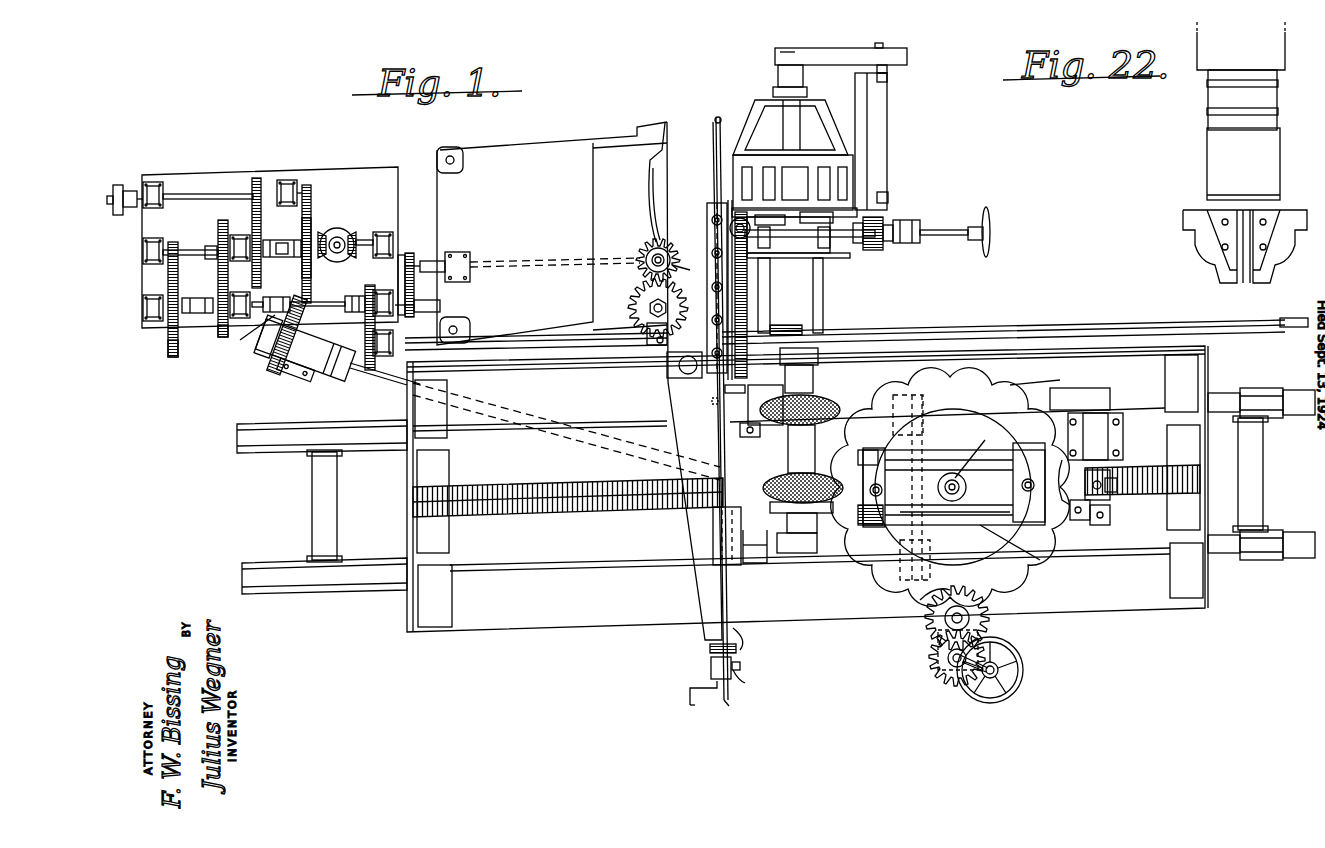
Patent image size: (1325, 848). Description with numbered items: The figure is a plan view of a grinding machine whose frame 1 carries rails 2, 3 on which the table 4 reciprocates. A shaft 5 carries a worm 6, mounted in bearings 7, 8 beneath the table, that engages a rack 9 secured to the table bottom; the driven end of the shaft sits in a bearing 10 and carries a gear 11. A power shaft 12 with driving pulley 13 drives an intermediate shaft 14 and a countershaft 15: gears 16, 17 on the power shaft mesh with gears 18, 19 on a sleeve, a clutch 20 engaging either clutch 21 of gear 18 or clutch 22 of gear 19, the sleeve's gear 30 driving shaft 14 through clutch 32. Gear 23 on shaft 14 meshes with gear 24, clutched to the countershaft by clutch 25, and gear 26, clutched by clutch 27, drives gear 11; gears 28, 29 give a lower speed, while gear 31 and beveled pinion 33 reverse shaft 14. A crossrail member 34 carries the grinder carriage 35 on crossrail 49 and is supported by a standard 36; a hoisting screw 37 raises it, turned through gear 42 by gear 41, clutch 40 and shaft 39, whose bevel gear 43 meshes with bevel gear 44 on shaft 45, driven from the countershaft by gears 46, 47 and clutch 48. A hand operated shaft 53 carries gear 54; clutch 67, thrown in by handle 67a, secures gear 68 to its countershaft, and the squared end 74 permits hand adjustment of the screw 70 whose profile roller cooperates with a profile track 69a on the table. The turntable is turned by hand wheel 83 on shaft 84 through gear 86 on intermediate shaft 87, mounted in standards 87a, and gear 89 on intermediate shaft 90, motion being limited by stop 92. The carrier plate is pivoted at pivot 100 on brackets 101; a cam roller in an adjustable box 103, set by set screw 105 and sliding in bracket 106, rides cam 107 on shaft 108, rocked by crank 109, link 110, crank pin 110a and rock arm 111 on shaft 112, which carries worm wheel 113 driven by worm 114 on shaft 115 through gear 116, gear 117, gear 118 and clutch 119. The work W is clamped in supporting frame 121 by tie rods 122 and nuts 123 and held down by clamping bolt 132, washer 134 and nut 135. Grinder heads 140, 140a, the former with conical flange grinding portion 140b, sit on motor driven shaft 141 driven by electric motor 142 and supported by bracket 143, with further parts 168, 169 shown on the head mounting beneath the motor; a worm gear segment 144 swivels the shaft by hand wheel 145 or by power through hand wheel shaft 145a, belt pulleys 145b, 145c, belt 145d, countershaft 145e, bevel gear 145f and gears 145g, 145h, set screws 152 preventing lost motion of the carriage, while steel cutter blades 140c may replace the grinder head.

In FIG. 1, the frame 1 is at (400, 614).
In FIG. 1, the rail 2 is at (245, 571).
In FIG. 1, the rail 3 is at (240, 438).
In FIG. 1, the table 4 is at (810, 578).
In FIG. 1, the shaft 5 is at (395, 388).
In FIG. 1, the worm 6 is at (780, 475).
In FIG. 1, the bearing 7 is at (706, 458).
In FIG. 1, the bearing 8 is at (868, 528).
In FIG. 1, the rack 9 is at (545, 487).
In FIG. 1, the bearing 10 is at (305, 370).
In FIG. 1, the gear 11 is at (283, 371).
In FIG. 1, the power shaft 12 is at (200, 194).
In FIG. 1, the driving pulley 13 is at (126, 185).
In FIG. 1, the intermediate shaft 14 is at (200, 255).
In FIG. 1, the countershaft 15 is at (322, 302).
In FIG. 1, the gear 16 is at (257, 178).
In FIG. 1, the gear 17 is at (307, 185).
In FIG. 1, the gear 18 is at (262, 240).
In FIG. 1, the gear 19 is at (311, 220).
In FIG. 1, the clutch 20 is at (282, 257).
In FIG. 1, the clutch 21 is at (243, 261).
In FIG. 1, the clutch 22 is at (338, 229).
In FIG. 1, the gear 23 is at (220, 222).
In FIG. 1, the gear 24 is at (222, 337).
In FIG. 1, the clutch 25 is at (196, 313).
In FIG. 1, the gear 26 is at (322, 258).
In FIG. 1, the clutch 27 is at (255, 337).
In FIG. 1, the gear 28 is at (173, 242).
In FIG. 1, the gear 29 is at (168, 350).
In FIG. 1, the gear 30 is at (285, 294).
In FIG. 1, the gear 31 is at (383, 232).
In FIG. 1, the clutch 32 is at (364, 246).
In FIG. 1, the beveled pinion 33 is at (354, 232).
In FIG. 1, the crossrail member 34 is at (672, 404).
In FIG. 1, the grinder carriage 35 is at (708, 210).
In FIG. 1, the standard 36 is at (552, 233).
In FIG. 1, the hoisting screw 37 is at (648, 308).
In FIG. 1, the shaft 39 is at (672, 248).
In FIG. 1, the clutch 40 is at (680, 272).
In FIG. 1, the gear 41 is at (652, 222).
In FIG. 1, the gear 42 is at (636, 292).
In FIG. 1, the bevel gear 43 is at (655, 215).
In FIG. 1, the bevel gear 44 is at (645, 255).
In FIG. 1, the shaft 45 is at (548, 262).
In FIG. 1, the gear 46 is at (410, 253).
In FIG. 1, the gear 47 is at (420, 312).
In FIG. 1, the clutch 48 is at (435, 295).
In FIG. 1, the crossrail 49 is at (714, 122).
In FIG. 1, the hand operated shaft 53 is at (690, 690).
In FIG. 1, the gear 54 is at (710, 647).
In FIG. 1, the clutch 67 is at (711, 664).
In FIG. 1, the handle 67a is at (753, 679).
In FIG. 1, the gear 68 is at (750, 639).
In FIG. 1, the profile track 69a is at (1205, 353).
In FIG. 1, the screw 70 is at (678, 367).
In FIG. 1, the squared end 74 is at (738, 705).
In FIG. 1, the hand wheel 83 is at (1023, 674).
In FIG. 1, the shaft 84 is at (992, 680).
In FIG. 1, the gear 86 is at (930, 660).
In FIG. 1, the intermediate shaft 87 is at (935, 672).
In FIG. 1, the standards 87a is at (990, 598).
In FIG. 1, the gear 89 is at (928, 625).
In FIG. 1, the intermediate shaft 90 is at (957, 606).
In FIG. 1, the stop 92 is at (985, 660).
In FIG. 1, the pivot 100 is at (930, 525).
In FIG. 1, the brackets 101 is at (903, 395).
In FIG. 1, the adjustable box 103 is at (1110, 518).
In FIG. 1, the set screw 105 is at (1110, 478).
In FIG. 1, the bracket 106 is at (1082, 520).
In FIG. 1, the cam 107 is at (1117, 488).
In FIG. 1, the shaft 108 is at (1100, 525).
In FIG. 1, the crank 109 is at (1095, 395).
In FIG. 1, the link 110 is at (1030, 376).
In FIG. 1, the crank pin 110a is at (725, 389).
In FIG. 1, the rock arm 111 is at (712, 403).
In FIG. 1, the shaft 112 is at (750, 437).
In FIG. 1, the worm wheel 113 is at (805, 347).
In FIG. 1, the worm 114 is at (785, 325).
In FIG. 1, the shaft 115 is at (970, 336).
In FIG. 1, the gear 116 is at (378, 372).
In FIG. 1, the gear 117 is at (373, 345).
In FIG. 1, the gear 118 is at (372, 303).
In FIG. 1, the clutch 119 is at (372, 286).
In FIG. 1, the supporting frame 121 is at (1010, 542).
In FIG. 1, the tie rods 122 is at (882, 488).
In FIG. 1, the nuts 123 is at (882, 492).
In FIG. 1, the clamping bolt 132 is at (978, 452).
In FIG. 1, the washer 134 is at (955, 511).
In FIG. 1, the nut 135 is at (950, 473).
In FIG. 1, the grinder head 140 is at (772, 510).
In FIG. 1, the grinder head 140a is at (825, 398).
In FIG. 1, the conical flange grinding portion 140b is at (817, 540).
In FIG. 22, the steel cutter blades 140c is at (1212, 262).
In FIG. 1, the motor driven shaft 141 is at (800, 560).
In FIG. 1, the electric motor 142 is at (758, 100).
In FIG. 1, the bracket 143 is at (738, 567).
In FIG. 1, the worm gear segment 144 is at (748, 296).
In FIG. 1, the hand wheel 145 is at (988, 215).
In FIG. 1, the hand wheel shaft 145a is at (948, 230).
In FIG. 1, the belt pulley 145b is at (782, 48).
In FIG. 1, the belt pulley 145c is at (885, 48).
In FIG. 1, the belt 145d is at (832, 48).
In FIG. 1, the countershaft 145e is at (885, 140).
In FIG. 1, the bevel gear 145f is at (880, 216).
In FIG. 1, the gear 145g is at (886, 242).
In FIG. 1, the gear 145h is at (905, 243).
In FIG. 1, the set screws 152 is at (714, 256).
In FIG. 1, the plate 168 is at (794, 218).
In FIG. 1, the shaft 169 is at (765, 240).
In FIG. 1, the work W is at (953, 487).